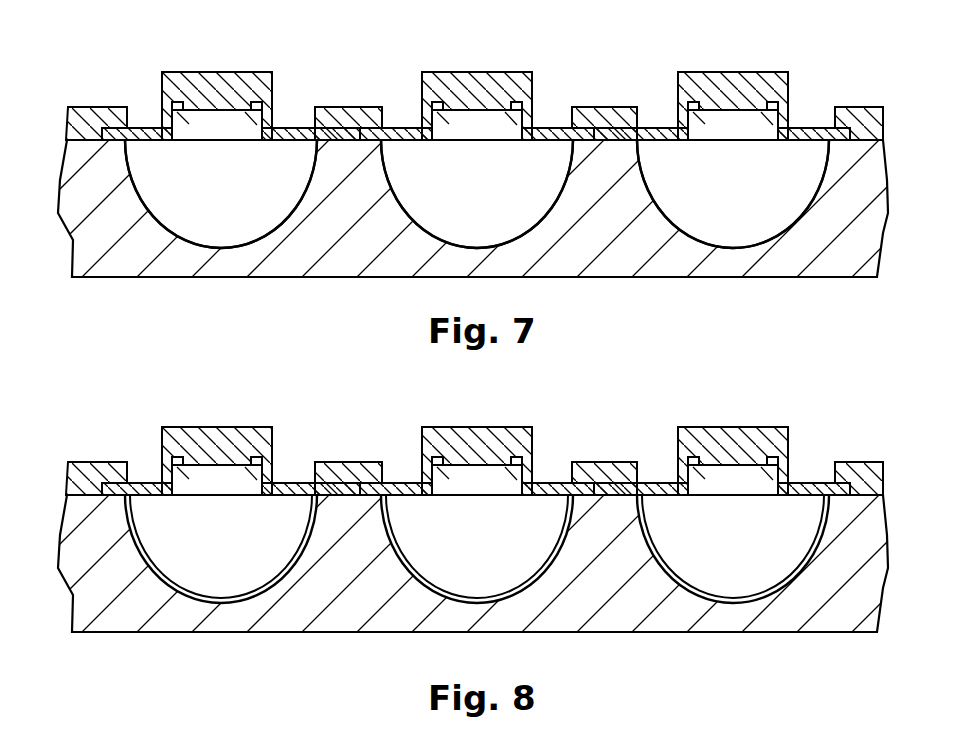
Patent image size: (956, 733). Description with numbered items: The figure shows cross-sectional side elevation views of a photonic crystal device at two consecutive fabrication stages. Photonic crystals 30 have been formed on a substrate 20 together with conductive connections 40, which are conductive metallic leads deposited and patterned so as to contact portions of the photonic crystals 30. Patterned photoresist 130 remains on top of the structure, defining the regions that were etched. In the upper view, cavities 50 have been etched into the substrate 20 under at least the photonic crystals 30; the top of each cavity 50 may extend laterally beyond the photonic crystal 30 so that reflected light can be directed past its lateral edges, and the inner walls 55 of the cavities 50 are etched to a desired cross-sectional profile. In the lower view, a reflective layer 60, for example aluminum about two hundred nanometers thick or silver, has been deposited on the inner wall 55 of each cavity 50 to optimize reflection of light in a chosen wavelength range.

In FIG. 7, the substrate 20 is at (337, 244).
In FIG. 8, the substrate 20 is at (478, 563).
In FIG. 7, the photonic crystal 30 is at (204, 134).
In FIG. 8, the photonic crystal 30 is at (475, 479).
In FIG. 7, the conductive connection 40 is at (145, 128).
In FIG. 8, the conductive connection 40 is at (476, 432).
In FIG. 7, the cavity 50 is at (220, 212).
In FIG. 8, the cavity 50 is at (477, 549).
In FIG. 7, the inner wall 55 is at (137, 192).
In FIG. 8, the reflective layer 60 is at (477, 546).
In FIG. 7, the patterned photoresist 130 is at (93, 107).
In FIG. 8, the patterned photoresist 130 is at (476, 412).